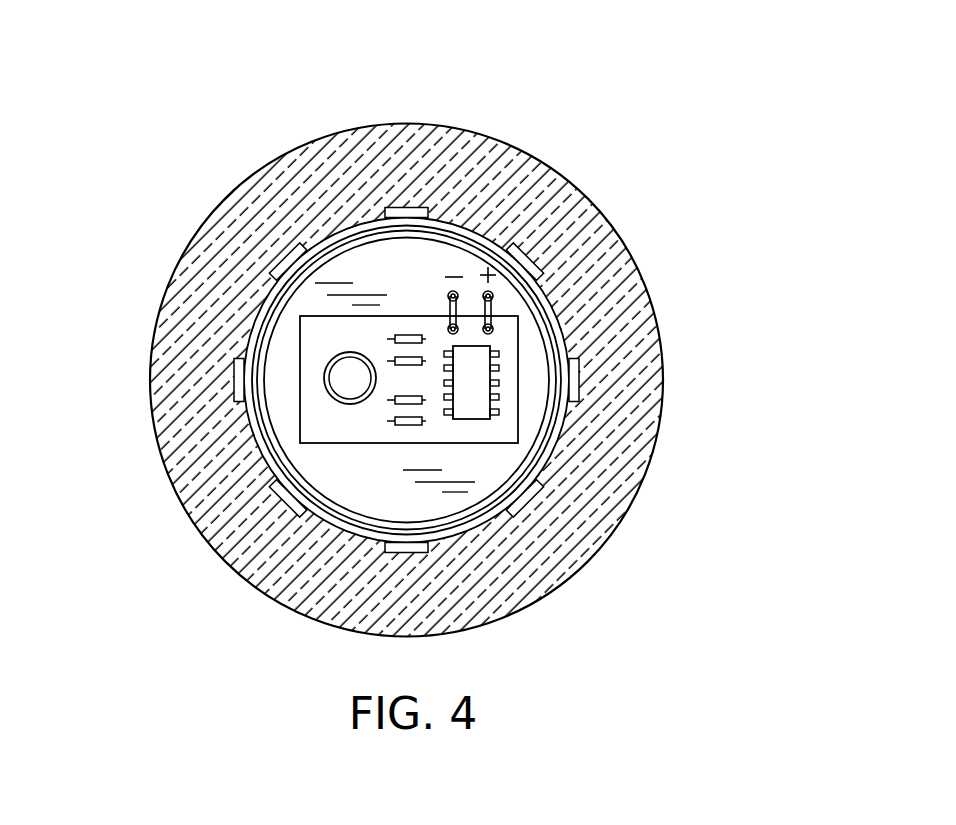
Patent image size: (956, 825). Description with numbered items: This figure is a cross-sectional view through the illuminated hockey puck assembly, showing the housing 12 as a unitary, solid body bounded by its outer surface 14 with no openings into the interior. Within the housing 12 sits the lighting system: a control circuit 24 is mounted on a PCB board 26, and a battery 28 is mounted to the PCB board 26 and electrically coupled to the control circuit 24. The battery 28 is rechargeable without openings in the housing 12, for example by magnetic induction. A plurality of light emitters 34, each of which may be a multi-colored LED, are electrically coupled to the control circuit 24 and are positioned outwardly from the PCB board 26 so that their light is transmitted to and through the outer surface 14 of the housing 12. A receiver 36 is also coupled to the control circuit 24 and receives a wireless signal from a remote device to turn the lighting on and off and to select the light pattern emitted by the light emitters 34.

The housing 12 is at (290, 197).
The outer surface 14 is at (500, 137).
The control circuit 24 is at (472, 392).
The PCB board 26 is at (503, 332).
The battery 28 is at (540, 382).
The light emitters 34 is at (410, 210).
The receiver 36 is at (343, 383).